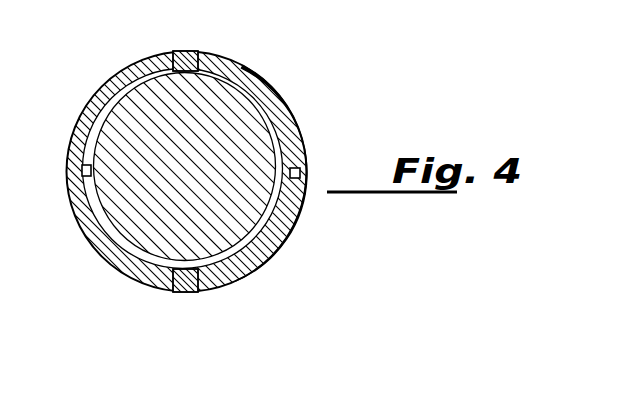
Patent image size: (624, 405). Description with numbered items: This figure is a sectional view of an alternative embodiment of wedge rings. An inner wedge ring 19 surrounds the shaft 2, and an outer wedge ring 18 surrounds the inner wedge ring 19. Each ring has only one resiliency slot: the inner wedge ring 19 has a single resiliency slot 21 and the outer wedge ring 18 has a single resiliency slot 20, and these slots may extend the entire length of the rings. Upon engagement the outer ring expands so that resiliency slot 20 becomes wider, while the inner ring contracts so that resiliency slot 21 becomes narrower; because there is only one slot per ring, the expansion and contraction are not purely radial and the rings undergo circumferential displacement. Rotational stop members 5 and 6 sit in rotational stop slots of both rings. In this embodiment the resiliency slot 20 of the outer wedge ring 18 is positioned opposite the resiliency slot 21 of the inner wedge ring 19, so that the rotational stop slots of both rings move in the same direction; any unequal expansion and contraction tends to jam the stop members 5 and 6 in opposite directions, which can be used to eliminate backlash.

The shaft 2 is at (148, 195).
The rotational stop member 5 is at (185, 52).
The rotational stop member 6 is at (182, 293).
The outer wedge ring 18 is at (290, 118).
The inner wedge ring 19 is at (288, 225).
The resiliency slot 20 is at (302, 172).
The resiliency slot 21 is at (82, 170).